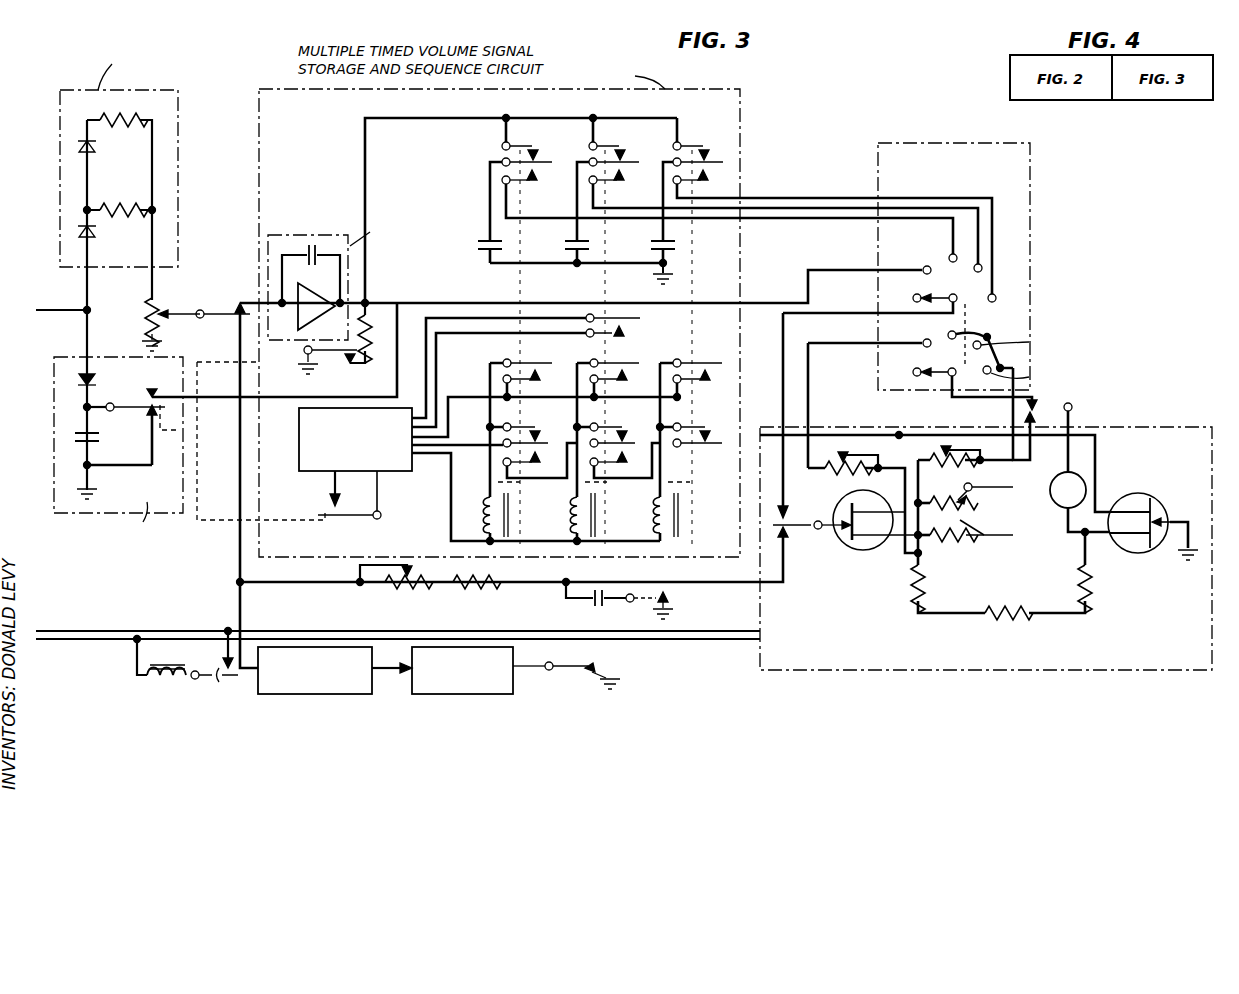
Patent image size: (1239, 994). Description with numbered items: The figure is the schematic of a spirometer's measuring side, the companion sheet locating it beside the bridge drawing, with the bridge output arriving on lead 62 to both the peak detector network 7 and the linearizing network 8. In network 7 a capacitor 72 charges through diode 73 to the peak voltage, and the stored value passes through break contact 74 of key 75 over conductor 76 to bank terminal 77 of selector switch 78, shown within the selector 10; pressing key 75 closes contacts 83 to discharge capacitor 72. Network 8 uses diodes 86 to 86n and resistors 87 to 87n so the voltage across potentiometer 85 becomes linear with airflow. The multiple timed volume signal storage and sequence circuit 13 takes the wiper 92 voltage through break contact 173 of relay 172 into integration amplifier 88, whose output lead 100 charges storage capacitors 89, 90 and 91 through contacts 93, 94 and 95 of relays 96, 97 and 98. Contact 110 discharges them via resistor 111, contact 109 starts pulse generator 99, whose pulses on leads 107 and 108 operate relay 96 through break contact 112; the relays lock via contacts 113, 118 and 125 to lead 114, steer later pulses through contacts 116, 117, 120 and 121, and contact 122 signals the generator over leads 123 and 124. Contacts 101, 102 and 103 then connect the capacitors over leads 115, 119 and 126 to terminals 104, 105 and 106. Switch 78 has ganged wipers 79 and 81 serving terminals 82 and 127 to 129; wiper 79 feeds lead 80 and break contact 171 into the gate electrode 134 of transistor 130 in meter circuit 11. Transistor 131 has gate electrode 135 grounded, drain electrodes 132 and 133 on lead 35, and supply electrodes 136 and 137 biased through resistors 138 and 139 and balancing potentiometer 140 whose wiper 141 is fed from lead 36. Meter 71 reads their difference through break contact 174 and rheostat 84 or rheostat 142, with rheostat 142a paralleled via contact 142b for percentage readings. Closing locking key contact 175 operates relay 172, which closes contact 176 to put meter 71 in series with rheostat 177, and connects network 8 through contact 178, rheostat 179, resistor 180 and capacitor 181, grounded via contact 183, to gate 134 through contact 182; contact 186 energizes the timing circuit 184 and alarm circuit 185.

The peak detector network 7 is at (68, 357).
The linearizing network 8 is at (71, 90).
The selector 10 is at (890, 143).
The meter circuit 11 is at (1158, 427).
The multiple timed volume signal storage and sequence circuit 13 is at (741, 91).
The lead 35 is at (82, 631).
The lead 36 is at (72, 642).
The lead 62 is at (70, 310).
The meter 71 is at (1060, 510).
The capacitor 72 is at (104, 436).
The diode 73 is at (100, 378).
The break contact 74 is at (146, 398).
The key 75 is at (178, 383).
The conductor 76 is at (206, 400).
The bank terminal 77 is at (924, 265).
The selector switch 78 is at (1022, 325).
The wiper 79 is at (936, 294).
The lead 80 is at (823, 312).
The wiper 81 is at (948, 382).
The terminal 82 is at (920, 340).
The contacts 83 is at (146, 412).
The rheostat 84 is at (830, 472).
The potentiometer 85 is at (146, 312).
The diode 86 is at (97, 231).
The diode 86n is at (95, 144).
The resistor 87 is at (117, 206).
The resistor 87n is at (111, 112).
The integration amplifier 88 is at (288, 235).
The storage capacitor 89 is at (508, 245).
The storage capacitor 90 is at (596, 245).
The storage capacitor 91 is at (682, 245).
The wiper 92 is at (197, 308).
The contact 93 is at (538, 154).
The contact 94 is at (624, 154).
The contact 95 is at (706, 153).
The relay 96 is at (484, 508).
The relay 97 is at (570, 508).
The relay 98 is at (654, 508).
The pulse generator 99 is at (380, 473).
The output lead 100 is at (366, 302).
The contact 101 is at (538, 174).
The contact 102 is at (626, 174).
The contact 103 is at (710, 168).
The bank terminal 104 is at (960, 260).
The bank terminal 105 is at (985, 270).
The bank terminal 106 is at (1000, 296).
The lead 107 is at (430, 454).
The lead 108 is at (468, 450).
The contact 109 is at (326, 509).
The contact 110 is at (330, 352).
The resistor 111 is at (371, 334).
The break contact 112 is at (543, 431).
The contact 113 is at (542, 367).
The lead 114 is at (470, 401).
The lead 115 is at (814, 218).
The contact 116 is at (549, 465).
The contact 117 is at (628, 431).
The contact 118 is at (629, 367).
The lead 119 is at (760, 218).
The contact 120 is at (636, 465).
The contact 121 is at (722, 421).
The contact 122 is at (632, 326).
The lead 123 is at (440, 362).
The lead 124 is at (440, 345).
The contact 125 is at (704, 368).
The lead 126 is at (776, 200).
The terminal 127 is at (950, 332).
The terminal 128 is at (1030, 345).
The terminal 129 is at (1032, 377).
The field effect transistor 130 is at (845, 548).
The field effect transistor 131 is at (1155, 548).
The drain electrode 132 is at (860, 535).
The drain electrode 133 is at (1132, 505).
The gate electrode 134 is at (838, 528).
The gate electrode 135 is at (1162, 515).
The supply electrode 136 is at (872, 540).
The supply electrode 137 is at (1132, 545).
The resistor 138 is at (930, 592).
The resistor 139 is at (1080, 582).
The balancing potentiometer 140 is at (1001, 606).
The wiper 141 is at (1010, 624).
The rheostat 142 is at (933, 529).
The rheostat 142a is at (975, 540).
The contact 142b is at (990, 454).
The break contact 171 is at (762, 527).
The relay 172 is at (192, 643).
The break contact 173 is at (237, 304).
The break contact 174 is at (1042, 400).
The locking key contact 175 is at (234, 662).
The contact 176 is at (1073, 411).
The rheostat 177 is at (918, 441).
The contact 178 is at (232, 318).
The rheostat 179 is at (426, 592).
The resistor 180 is at (497, 592).
The capacitor 181 is at (590, 606).
The contact 182 is at (762, 550).
The contact 183 is at (670, 602).
The timing circuit 184 is at (286, 647).
The alarm circuit 185 is at (474, 647).
The contact 186 is at (594, 668).